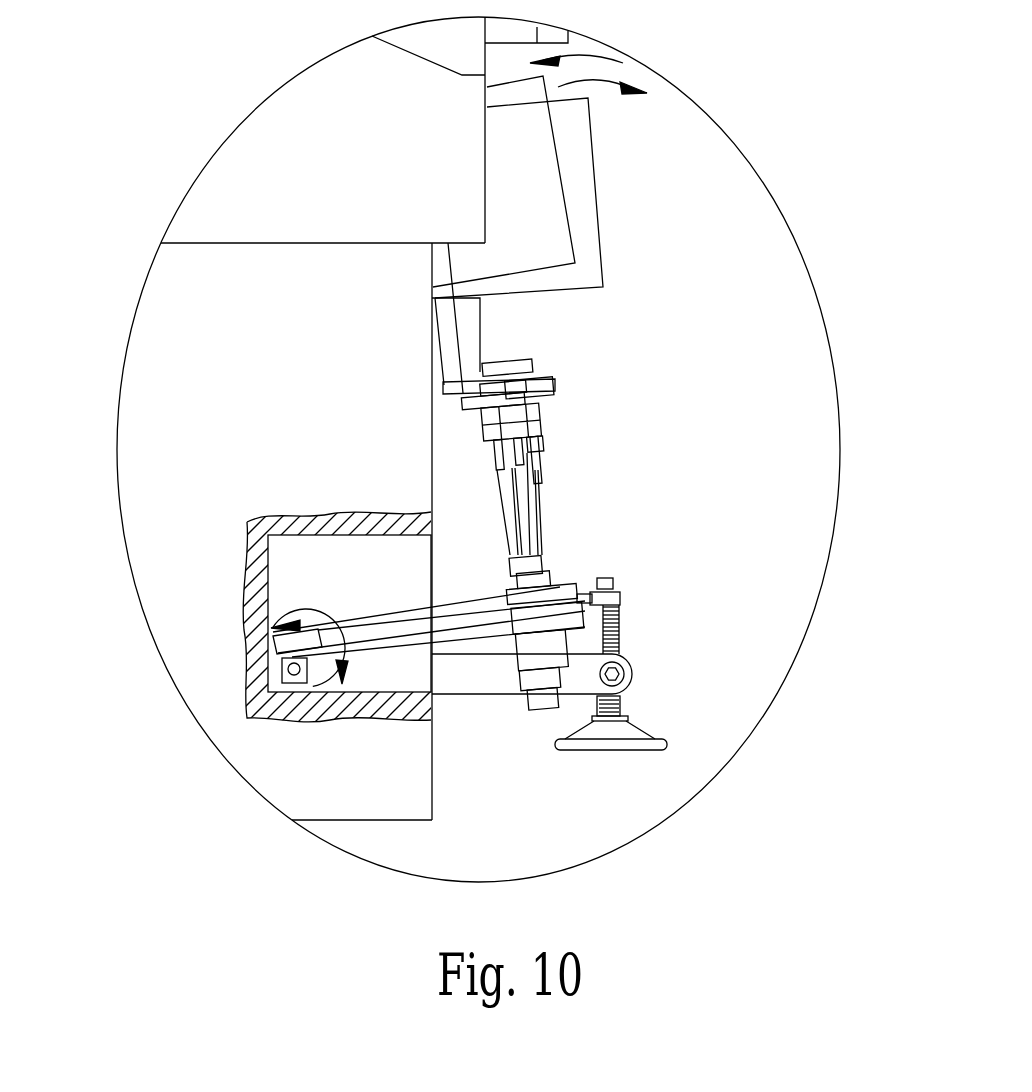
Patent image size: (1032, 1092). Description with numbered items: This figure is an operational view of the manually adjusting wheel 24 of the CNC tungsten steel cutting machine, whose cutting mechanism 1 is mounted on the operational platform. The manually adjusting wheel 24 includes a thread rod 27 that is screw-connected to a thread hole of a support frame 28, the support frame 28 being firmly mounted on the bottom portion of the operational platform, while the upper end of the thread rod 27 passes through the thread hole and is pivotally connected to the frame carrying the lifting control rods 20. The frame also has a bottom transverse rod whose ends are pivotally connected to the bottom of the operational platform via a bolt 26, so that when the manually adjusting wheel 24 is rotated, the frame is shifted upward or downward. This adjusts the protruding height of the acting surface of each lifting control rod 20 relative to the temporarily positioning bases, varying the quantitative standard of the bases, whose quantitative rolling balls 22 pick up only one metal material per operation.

The cutting mechanism 1 is at (163, 460).
The lifting control rod 20 is at (472, 329).
The quantitative rolling balls 22 is at (543, 387).
The manually adjusting wheel 24 is at (620, 730).
The bolt 26 is at (288, 678).
The thread rod 27 is at (618, 637).
The support frame 28 is at (482, 672).